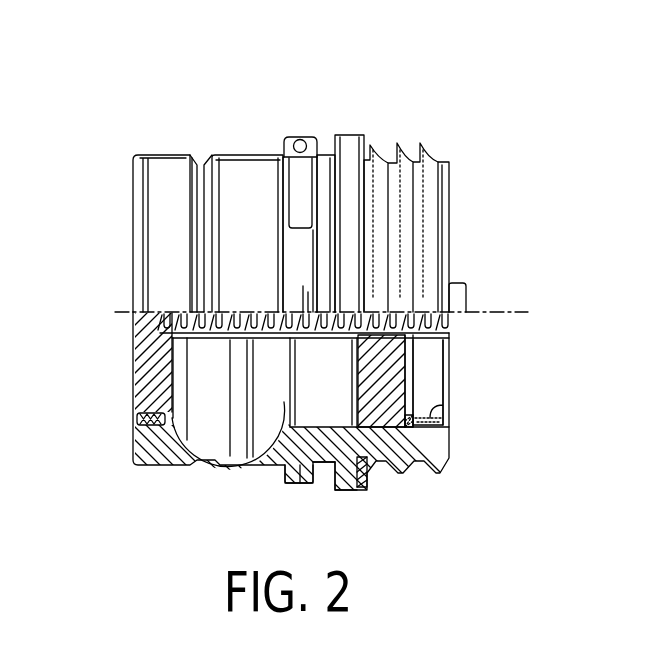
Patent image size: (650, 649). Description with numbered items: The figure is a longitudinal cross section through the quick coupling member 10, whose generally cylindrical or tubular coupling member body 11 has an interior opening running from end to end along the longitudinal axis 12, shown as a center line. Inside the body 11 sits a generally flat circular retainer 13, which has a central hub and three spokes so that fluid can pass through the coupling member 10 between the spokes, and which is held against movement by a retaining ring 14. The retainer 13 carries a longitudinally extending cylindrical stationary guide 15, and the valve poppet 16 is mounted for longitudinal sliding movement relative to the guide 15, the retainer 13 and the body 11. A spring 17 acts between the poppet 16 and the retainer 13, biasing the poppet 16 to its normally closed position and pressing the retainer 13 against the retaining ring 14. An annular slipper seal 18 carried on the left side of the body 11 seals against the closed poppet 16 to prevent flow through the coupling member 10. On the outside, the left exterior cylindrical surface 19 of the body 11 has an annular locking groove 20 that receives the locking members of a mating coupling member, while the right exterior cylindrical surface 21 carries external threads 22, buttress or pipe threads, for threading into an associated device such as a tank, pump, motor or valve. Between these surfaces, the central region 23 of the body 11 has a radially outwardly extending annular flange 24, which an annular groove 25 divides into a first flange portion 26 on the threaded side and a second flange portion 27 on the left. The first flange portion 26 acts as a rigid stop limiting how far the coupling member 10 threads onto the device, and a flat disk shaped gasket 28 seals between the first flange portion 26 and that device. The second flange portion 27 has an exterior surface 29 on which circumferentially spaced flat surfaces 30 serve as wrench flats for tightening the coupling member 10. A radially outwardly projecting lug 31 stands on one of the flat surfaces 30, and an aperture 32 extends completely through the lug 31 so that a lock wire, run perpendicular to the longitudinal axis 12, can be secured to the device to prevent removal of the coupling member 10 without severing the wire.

The coupling member 10 is at (375, 77).
The coupling member body 11 is at (176, 468).
The longitudinal axis 12 is at (478, 312).
The retainer 13 is at (398, 396).
The retaining ring 14 is at (418, 420).
The stationary guide 15 is at (418, 346).
The valve poppet 16 is at (208, 342).
The spring 17 is at (416, 340).
The annular slipper seal 18 is at (137, 418).
The left exterior cylindrical surface 19 is at (138, 158).
The annular locking groove 20 is at (201, 165).
The right exterior cylindrical surface 21 is at (446, 162).
The external threads 22 is at (406, 158).
The central region 23 is at (318, 422).
The annular flange 24 is at (290, 432).
The annular groove 25 is at (331, 464).
The first flange portion 26 is at (350, 485).
The second flange portion 27 is at (297, 486).
The gasket 28 is at (368, 473).
The exterior surface 29 is at (307, 484).
The flat surfaces 30 is at (296, 258).
The lug 31 is at (292, 137).
The aperture 32 is at (303, 139).